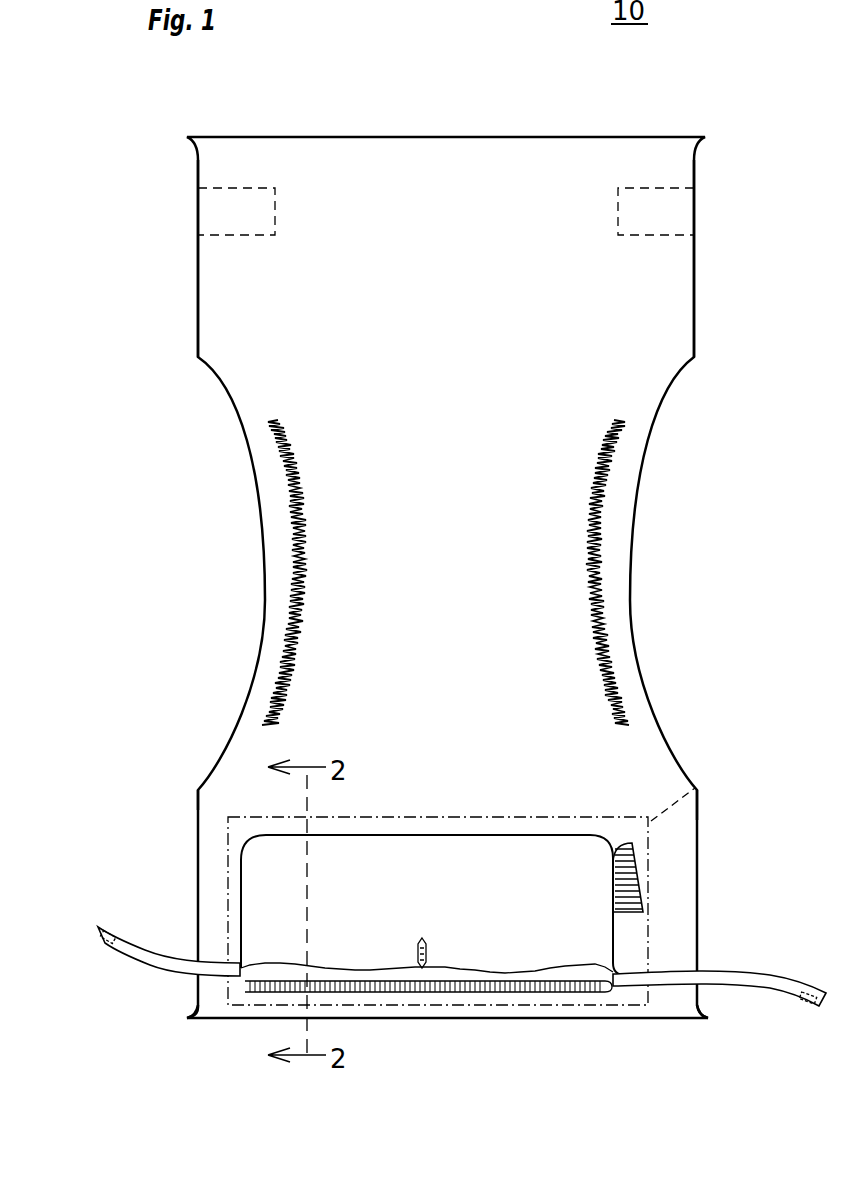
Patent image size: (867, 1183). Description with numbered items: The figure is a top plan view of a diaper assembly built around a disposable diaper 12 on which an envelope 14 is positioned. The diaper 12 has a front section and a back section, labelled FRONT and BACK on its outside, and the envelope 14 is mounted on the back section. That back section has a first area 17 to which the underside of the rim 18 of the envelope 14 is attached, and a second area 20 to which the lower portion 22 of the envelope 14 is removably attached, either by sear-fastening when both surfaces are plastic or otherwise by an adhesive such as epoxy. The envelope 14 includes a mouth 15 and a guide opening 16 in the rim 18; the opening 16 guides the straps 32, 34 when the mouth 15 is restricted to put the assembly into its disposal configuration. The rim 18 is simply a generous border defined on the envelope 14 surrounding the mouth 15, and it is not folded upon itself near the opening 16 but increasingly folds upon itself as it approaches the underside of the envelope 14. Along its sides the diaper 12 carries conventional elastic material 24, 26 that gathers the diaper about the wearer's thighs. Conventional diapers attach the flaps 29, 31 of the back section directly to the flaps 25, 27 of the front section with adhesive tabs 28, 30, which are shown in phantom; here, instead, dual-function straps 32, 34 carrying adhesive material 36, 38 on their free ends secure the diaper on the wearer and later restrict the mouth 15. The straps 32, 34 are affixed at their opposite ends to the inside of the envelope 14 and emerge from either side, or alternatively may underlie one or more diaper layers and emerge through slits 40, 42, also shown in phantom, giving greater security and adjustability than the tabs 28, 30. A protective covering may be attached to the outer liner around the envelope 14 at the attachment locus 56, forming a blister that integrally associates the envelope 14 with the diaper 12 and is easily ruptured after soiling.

The disposable diaper 12 is at (338, 183).
The envelope 14 is at (614, 814).
The mouth 15 is at (425, 992).
The guide opening 16 is at (428, 960).
The first area 17 is at (229, 944).
The rim 18 is at (303, 962).
The second area 20 is at (213, 853).
The lower portion 22 is at (645, 898).
The elastic material 24 is at (620, 448).
The flap 25 is at (676, 848).
The elastic material 26 is at (275, 448).
The flap 27 is at (213, 800).
The adhesive tab 28 is at (694, 230).
The flap 29 is at (680, 320).
The adhesive tab 30 is at (198, 218).
The flap 31 is at (210, 305).
The strap 32 is at (776, 975).
The strap 34 is at (154, 968).
The adhesive material 36 is at (808, 1005).
The adhesive material 38 is at (106, 926).
The slit 40 is at (664, 995).
The slit 42 is at (216, 996).
The attachment locus 56 is at (699, 788).